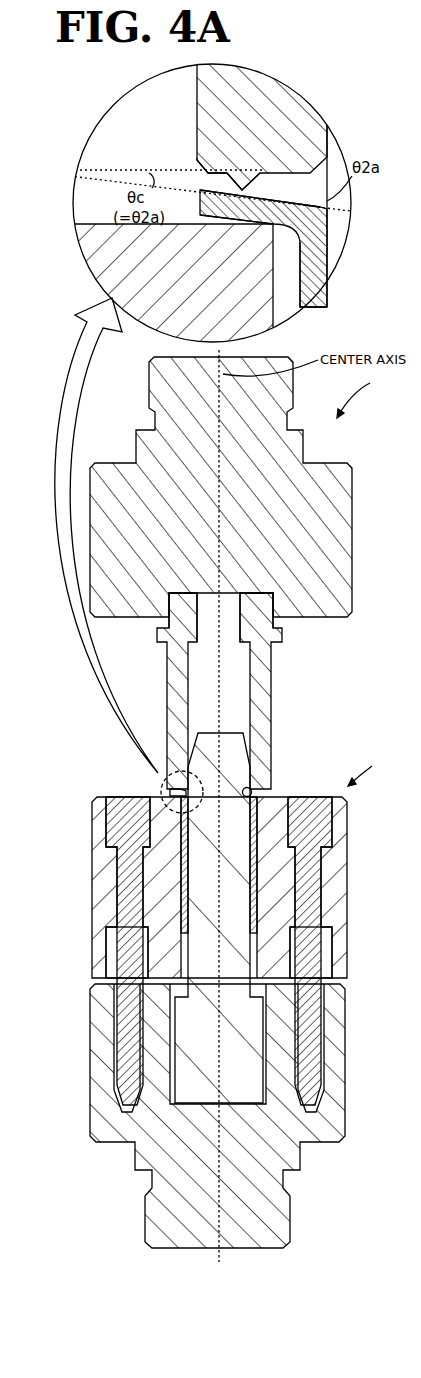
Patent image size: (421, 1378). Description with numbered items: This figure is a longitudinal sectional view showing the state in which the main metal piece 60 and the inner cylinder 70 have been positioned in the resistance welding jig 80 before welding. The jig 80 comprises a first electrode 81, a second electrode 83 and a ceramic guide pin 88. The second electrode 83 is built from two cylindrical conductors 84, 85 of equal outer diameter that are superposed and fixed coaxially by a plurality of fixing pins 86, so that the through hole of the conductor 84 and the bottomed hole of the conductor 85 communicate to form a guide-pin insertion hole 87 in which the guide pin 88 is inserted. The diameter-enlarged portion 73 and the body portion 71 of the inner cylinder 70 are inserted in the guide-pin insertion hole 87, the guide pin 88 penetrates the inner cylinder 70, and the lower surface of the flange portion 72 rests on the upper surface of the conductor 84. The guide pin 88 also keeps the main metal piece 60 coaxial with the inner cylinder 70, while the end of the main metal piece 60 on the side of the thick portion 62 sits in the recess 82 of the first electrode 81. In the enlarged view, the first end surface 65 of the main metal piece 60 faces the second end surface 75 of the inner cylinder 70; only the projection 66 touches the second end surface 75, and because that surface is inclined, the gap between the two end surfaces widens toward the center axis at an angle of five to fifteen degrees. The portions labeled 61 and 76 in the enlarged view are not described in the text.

The main metal piece 60 is at (180, 700).
The tube body 61 is at (218, 103).
The thick portion 62 is at (176, 622).
The first end surface 65 is at (202, 178).
The projection 66 is at (243, 180).
The inner cylinder 70 is at (184, 856).
The body portion 71 is at (316, 258).
The flange portion 72 is at (258, 226).
The diameter-enlarged portion 73 is at (150, 931).
The second end surface 75 is at (283, 188).
The flange portion of seal 76 is at (318, 215).
The resistance welding jig 80 is at (365, 395).
The first electrode 81 is at (322, 498).
The recess 82 is at (262, 617).
The second electrode 83 is at (371, 771).
The conductor 84 is at (95, 233).
The conductor 85 is at (326, 1125).
The fixing pin 86 is at (108, 822).
The guide-pin insertion hole 87 is at (256, 788).
The guide pin 88 is at (330, 172).